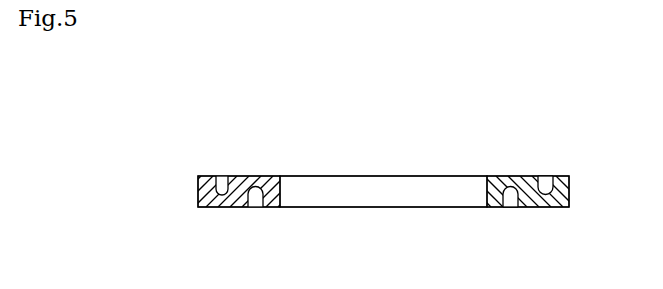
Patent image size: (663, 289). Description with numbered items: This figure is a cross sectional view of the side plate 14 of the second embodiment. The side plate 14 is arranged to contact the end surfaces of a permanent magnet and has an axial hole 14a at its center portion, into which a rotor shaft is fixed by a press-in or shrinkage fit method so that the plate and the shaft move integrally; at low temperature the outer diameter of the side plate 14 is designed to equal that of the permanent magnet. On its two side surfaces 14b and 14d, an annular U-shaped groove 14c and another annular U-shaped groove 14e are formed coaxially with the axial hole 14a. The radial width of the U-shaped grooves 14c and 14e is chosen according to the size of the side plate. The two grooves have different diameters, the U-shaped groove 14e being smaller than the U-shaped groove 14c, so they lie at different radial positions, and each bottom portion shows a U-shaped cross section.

The side plate 14 is at (388, 131).
The axial hole 14a is at (283, 190).
The side surface 14b is at (500, 176).
The annular U-shaped groove 14c is at (545, 176).
The side surface 14d is at (232, 204).
The annular U-shaped groove 14e is at (513, 198).